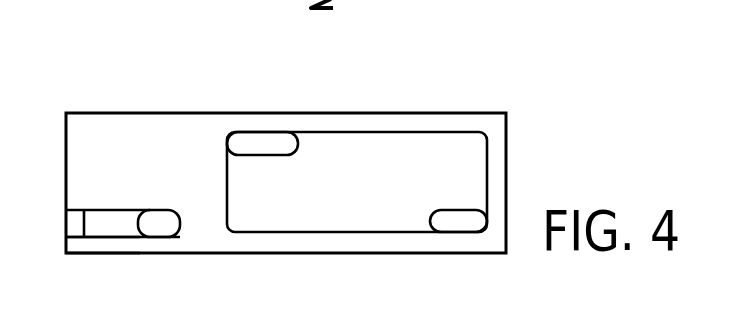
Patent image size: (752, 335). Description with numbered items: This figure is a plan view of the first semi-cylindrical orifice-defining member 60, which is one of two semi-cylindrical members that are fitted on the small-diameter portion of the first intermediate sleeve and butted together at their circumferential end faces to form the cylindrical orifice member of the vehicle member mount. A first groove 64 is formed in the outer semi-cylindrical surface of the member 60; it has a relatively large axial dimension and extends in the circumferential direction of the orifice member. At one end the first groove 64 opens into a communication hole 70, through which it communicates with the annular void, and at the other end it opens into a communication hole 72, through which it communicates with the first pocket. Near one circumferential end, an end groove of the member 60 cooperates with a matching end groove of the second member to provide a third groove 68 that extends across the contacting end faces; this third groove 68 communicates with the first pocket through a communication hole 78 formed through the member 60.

The first semi-cylindrical orifice-defining member 60 is at (492, 71).
The first groove 64 is at (383, 139).
The communication hole 70 is at (257, 137).
The communication hole 72 is at (451, 232).
The third groove 68 is at (105, 237).
The communication hole 78 is at (157, 237).